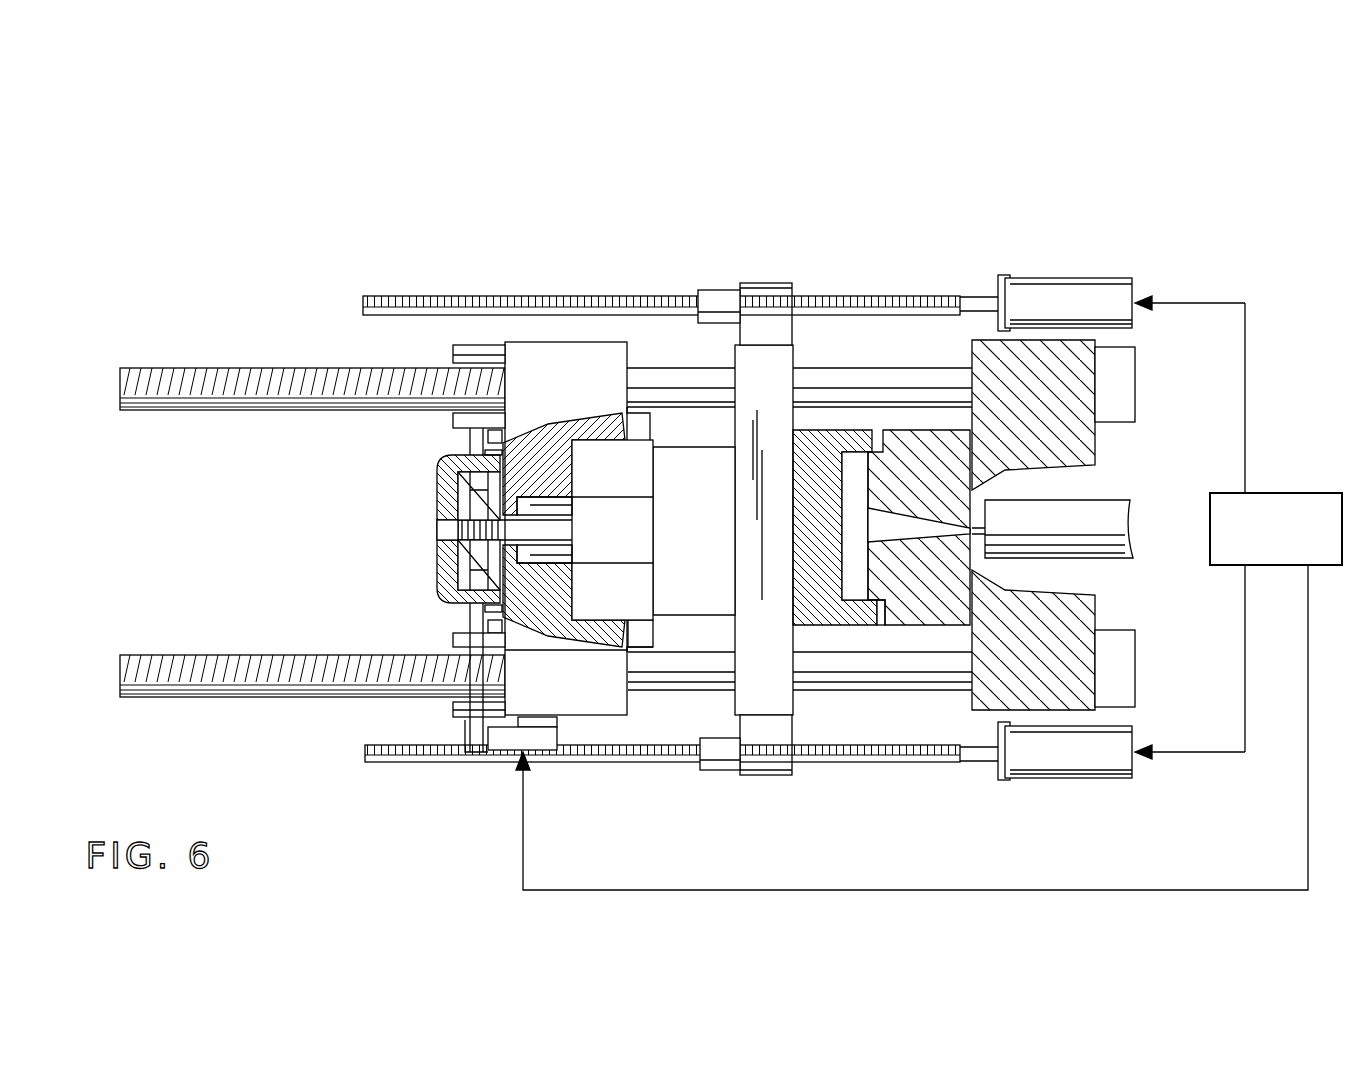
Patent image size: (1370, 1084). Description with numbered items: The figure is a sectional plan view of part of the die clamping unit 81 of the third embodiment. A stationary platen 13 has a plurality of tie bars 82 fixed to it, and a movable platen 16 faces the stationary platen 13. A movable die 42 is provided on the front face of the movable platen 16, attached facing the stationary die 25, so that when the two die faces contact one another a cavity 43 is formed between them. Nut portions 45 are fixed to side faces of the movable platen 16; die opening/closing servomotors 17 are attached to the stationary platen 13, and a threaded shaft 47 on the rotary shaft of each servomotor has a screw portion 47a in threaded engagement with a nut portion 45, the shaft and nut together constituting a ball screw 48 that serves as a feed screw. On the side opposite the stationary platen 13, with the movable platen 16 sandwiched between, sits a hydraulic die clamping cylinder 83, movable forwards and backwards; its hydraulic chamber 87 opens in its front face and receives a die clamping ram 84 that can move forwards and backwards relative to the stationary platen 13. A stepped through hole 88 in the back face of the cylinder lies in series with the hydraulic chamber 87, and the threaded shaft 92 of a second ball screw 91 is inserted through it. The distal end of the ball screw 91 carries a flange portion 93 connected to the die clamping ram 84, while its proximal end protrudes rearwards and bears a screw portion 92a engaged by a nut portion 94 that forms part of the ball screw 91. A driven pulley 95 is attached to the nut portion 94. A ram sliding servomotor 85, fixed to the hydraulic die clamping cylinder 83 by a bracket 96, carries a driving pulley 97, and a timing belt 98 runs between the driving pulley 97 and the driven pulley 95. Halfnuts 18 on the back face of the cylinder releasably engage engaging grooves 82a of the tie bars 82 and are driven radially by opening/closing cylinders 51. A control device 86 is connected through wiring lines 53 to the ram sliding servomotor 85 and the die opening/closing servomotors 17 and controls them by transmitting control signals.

The stationary platen 13 is at (1100, 660).
The movable platen 16 is at (795, 668).
The die opening/closing servomotor 17 is at (1078, 280).
The halfnut 18 is at (455, 352).
The stationary die 25 is at (935, 445).
The movable die 42 is at (822, 445).
The cavity 43 is at (858, 470).
The nut portion 45 is at (712, 292).
The threaded shaft 47 is at (975, 297).
The screw portion 47a is at (617, 296).
The ball screw 48 is at (768, 283).
The opening/closing cylinder 51 is at (490, 437).
The wiring line 53 is at (1246, 341).
The die clamping unit 81 is at (746, 188).
The tie bar 82 is at (812, 370).
The engaging groove 82a is at (236, 368).
The hydraulic die clamping cylinder 83 is at (625, 352).
The die clamping ram 84 is at (653, 550).
The ram sliding servomotor 85 is at (503, 750).
The control device 86 is at (1320, 493).
The hydraulic chamber 87 is at (580, 610).
The stepped through hole 88 is at (575, 580).
The ball screw 91 is at (458, 560).
The threaded shaft 92 is at (540, 480).
The screw portion 92a is at (440, 525).
The flange portion 93 is at (572, 532).
The nut portion 94 is at (445, 597).
The driven pulley 95 is at (440, 470).
The bracket 96 is at (545, 717).
The driving pulley 97 is at (460, 752).
The timing belt 98 is at (470, 623).